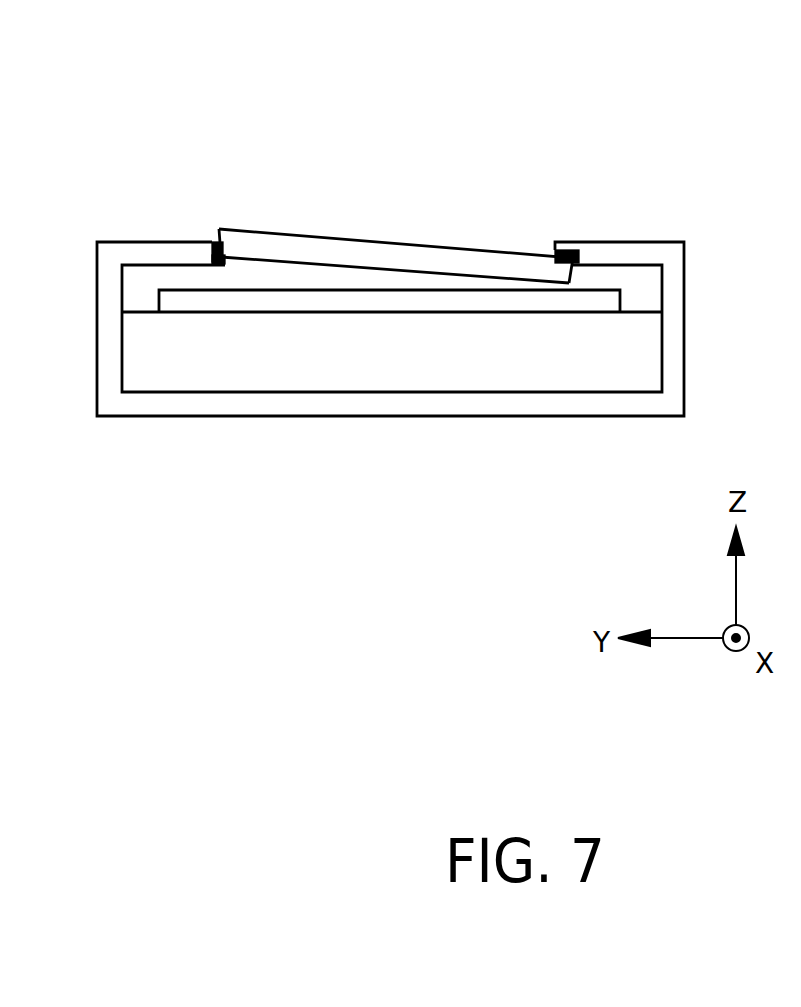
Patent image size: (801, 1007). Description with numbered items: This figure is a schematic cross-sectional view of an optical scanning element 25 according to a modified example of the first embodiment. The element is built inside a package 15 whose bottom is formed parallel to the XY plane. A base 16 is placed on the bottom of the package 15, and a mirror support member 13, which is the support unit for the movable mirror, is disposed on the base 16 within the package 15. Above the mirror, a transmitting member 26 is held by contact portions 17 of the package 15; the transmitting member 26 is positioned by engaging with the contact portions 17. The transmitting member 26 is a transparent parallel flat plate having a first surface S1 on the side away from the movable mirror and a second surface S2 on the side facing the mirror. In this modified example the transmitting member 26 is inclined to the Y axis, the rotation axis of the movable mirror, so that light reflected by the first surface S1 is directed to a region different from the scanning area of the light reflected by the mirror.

The optical scanning element 25 is at (190, 108).
The mirror support member 13 is at (220, 300).
The package 15 is at (628, 405).
The base 16 is at (640, 362).
The contact portion 17 is at (216, 243).
The transmitting member 26 is at (511, 235).
The first surface S1 is at (353, 238).
The second surface S2 is at (286, 262).